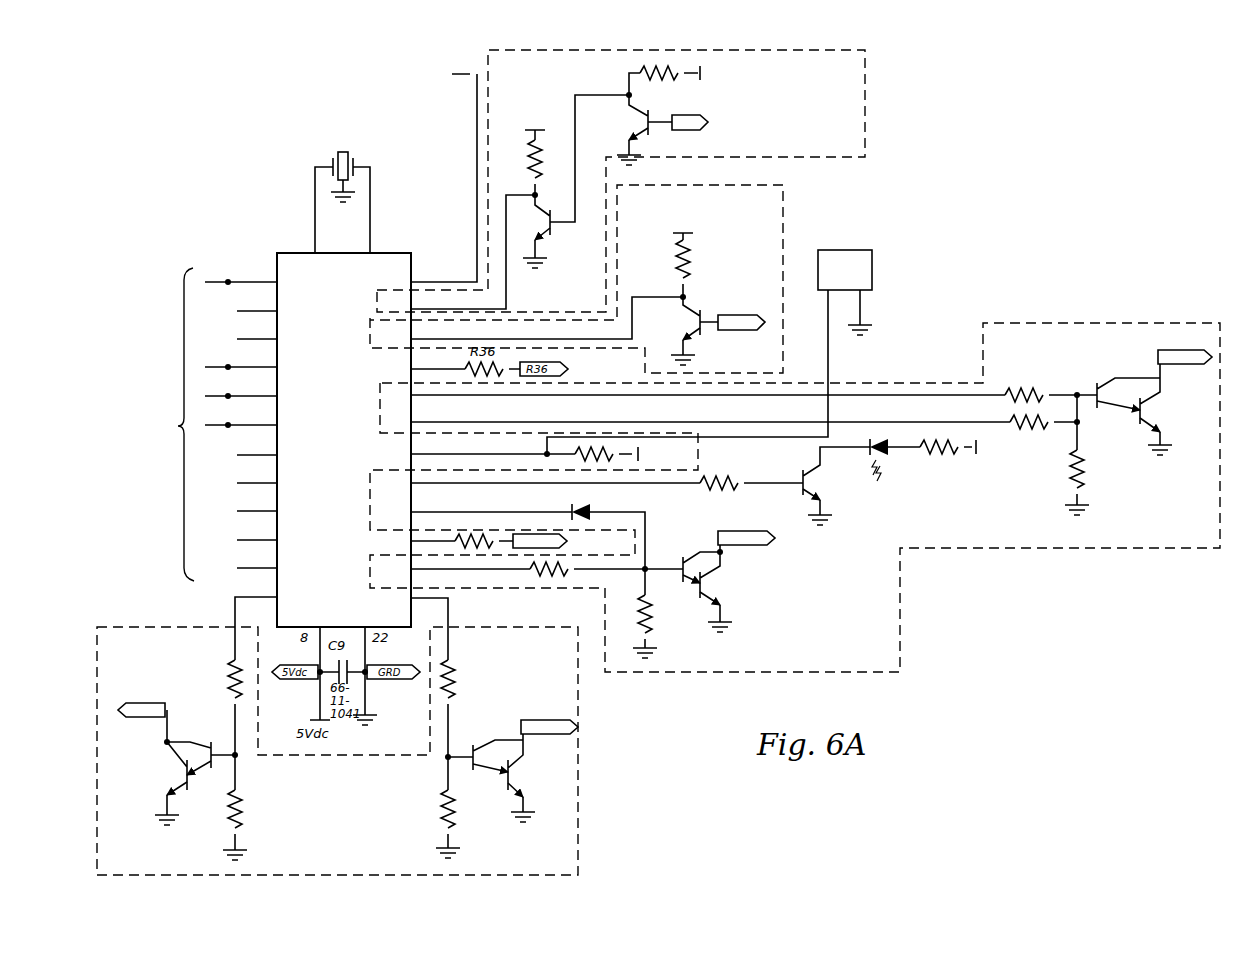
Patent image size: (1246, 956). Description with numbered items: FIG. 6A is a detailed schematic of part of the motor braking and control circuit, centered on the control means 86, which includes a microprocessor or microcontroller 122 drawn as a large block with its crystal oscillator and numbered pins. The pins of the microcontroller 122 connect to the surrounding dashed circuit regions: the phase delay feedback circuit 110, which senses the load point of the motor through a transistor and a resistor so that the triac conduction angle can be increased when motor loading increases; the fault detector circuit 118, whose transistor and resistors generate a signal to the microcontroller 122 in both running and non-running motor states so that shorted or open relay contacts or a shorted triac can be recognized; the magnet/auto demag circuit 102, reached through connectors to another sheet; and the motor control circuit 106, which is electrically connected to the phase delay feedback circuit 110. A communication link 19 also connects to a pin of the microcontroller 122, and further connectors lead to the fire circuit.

The control means 86 is at (262, 247).
The microcontroller 122 is at (300, 253).
The phase delay feedback circuit 110 is at (866, 66).
The fault detector circuit 118 is at (785, 190).
The communication link 19 is at (654, 338).
The magnet/auto demag circuit 102 is at (1213, 328).
The motor control circuit 106 is at (578, 797).